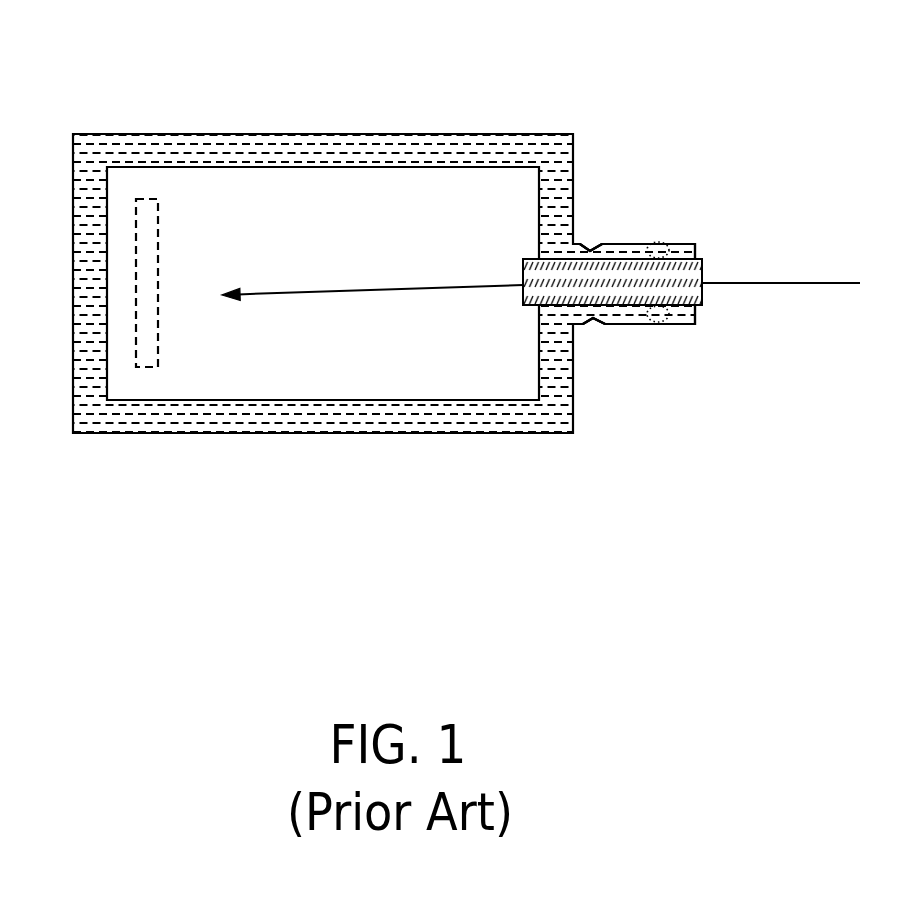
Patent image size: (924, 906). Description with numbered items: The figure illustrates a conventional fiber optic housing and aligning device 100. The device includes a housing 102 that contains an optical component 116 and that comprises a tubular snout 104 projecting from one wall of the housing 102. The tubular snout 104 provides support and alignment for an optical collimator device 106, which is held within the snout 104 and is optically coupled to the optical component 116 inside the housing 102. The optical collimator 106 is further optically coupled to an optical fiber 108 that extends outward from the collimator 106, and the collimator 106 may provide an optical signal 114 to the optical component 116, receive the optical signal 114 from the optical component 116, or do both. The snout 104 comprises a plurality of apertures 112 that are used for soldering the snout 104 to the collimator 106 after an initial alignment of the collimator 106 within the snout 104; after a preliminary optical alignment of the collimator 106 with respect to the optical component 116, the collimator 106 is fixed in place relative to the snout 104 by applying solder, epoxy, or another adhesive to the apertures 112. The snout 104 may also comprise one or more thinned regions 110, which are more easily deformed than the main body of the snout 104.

The fiber optic housing and aligning device 100 is at (227, 37).
The housing 102 is at (408, 133).
The tubular snout 104 is at (697, 315).
The optical collimator device 106 is at (703, 268).
The optical fiber 108 is at (843, 283).
The thinned regions 110 is at (596, 230).
The apertures 112 is at (658, 243).
The optical signal 114 is at (361, 289).
The optical component 116 is at (157, 217).